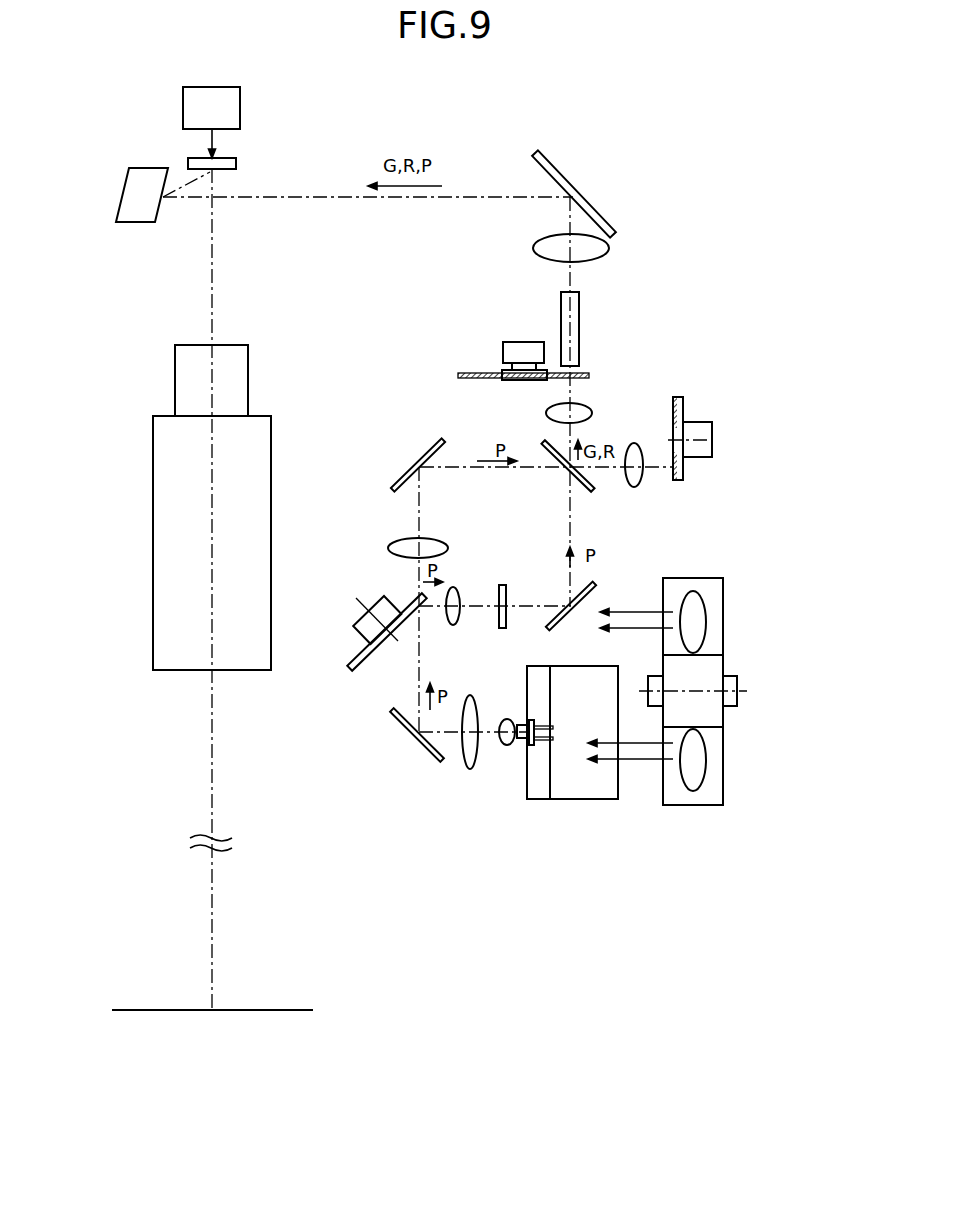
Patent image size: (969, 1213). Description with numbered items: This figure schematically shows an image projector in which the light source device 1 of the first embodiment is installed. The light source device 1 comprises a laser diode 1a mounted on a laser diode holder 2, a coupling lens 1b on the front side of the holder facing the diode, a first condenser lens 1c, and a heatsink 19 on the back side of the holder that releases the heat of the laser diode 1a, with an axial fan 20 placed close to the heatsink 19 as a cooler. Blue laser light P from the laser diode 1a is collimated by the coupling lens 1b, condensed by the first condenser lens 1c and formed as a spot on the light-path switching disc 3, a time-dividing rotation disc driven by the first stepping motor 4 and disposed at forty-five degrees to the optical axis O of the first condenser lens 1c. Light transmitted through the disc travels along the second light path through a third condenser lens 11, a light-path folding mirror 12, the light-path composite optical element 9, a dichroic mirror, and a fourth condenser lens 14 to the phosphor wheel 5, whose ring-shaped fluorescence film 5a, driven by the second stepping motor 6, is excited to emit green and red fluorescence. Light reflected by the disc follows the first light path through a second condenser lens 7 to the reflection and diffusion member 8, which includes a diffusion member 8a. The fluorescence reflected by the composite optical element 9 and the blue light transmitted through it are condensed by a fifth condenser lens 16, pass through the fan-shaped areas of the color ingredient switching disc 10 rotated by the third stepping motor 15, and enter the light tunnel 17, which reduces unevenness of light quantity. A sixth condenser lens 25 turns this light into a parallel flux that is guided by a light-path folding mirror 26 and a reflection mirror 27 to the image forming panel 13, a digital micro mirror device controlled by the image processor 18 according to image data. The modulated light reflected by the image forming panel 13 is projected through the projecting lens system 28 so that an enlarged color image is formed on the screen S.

The light source device 1 is at (531, 779).
The laser diode 1a is at (523, 740).
The coupling lens 1b is at (507, 747).
The first condenser lens 1c is at (473, 767).
The laser diode holder 2 is at (540, 788).
The light-path switching disc 3 is at (350, 660).
The first stepping motor 4 is at (352, 620).
The phosphor wheel 5 is at (683, 488).
The fluorescence film 5a is at (675, 479).
The second stepping motor 6 is at (712, 432).
The second condenser lens 7 is at (450, 623).
The reflection and diffusion member 8 is at (563, 623).
The diffusion member 8a is at (503, 585).
The light-path composite optical element 9 is at (587, 494).
The color ingredient switching disc 10 is at (486, 370).
The third condenser lens 11 is at (392, 545).
The light-path folding mirror 12 is at (398, 487).
The image forming panel 13 is at (237, 162).
The fourth condenser lens 14 is at (633, 448).
The third stepping motor 15 is at (528, 342).
The fifth condenser lens 16 is at (548, 412).
The light tunnel 17 is at (580, 312).
The image processor 18 is at (241, 111).
The heatsink 19 is at (585, 757).
The axial fan 20 is at (723, 752).
The sixth condenser lens 25 is at (530, 245).
The light-path folding mirror 26 is at (549, 161).
The reflection mirror 27 is at (124, 185).
The projecting lens system 28 is at (160, 510).
The optical axis O is at (418, 690).
The screen S is at (266, 1010).